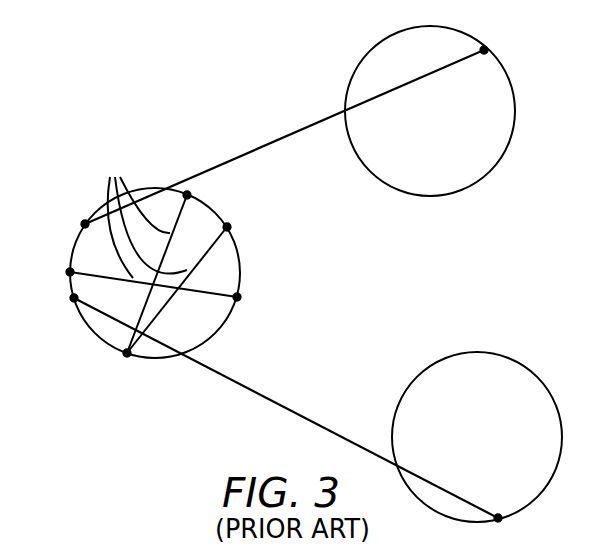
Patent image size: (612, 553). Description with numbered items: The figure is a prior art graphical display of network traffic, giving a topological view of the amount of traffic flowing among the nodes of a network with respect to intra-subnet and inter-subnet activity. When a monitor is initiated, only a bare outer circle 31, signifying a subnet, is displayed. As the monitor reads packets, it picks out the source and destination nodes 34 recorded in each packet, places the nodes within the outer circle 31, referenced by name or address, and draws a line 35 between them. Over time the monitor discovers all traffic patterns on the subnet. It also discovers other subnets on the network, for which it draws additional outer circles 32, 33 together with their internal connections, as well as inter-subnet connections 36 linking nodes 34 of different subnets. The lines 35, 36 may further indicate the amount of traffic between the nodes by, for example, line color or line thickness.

The outer circle 31 is at (155, 360).
The additional outer circle 32 is at (355, 68).
The additional outer circle 33 is at (547, 387).
The source and destination nodes 34 is at (82, 222).
The line 35 is at (121, 186).
The inter-subnet connections 36 is at (248, 153).